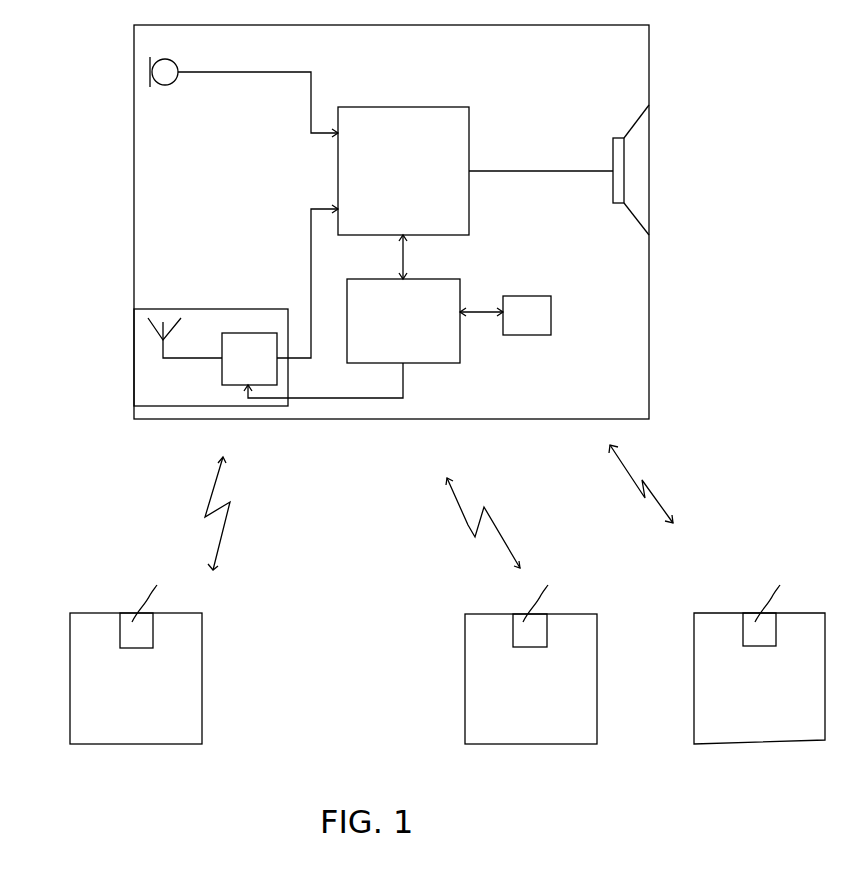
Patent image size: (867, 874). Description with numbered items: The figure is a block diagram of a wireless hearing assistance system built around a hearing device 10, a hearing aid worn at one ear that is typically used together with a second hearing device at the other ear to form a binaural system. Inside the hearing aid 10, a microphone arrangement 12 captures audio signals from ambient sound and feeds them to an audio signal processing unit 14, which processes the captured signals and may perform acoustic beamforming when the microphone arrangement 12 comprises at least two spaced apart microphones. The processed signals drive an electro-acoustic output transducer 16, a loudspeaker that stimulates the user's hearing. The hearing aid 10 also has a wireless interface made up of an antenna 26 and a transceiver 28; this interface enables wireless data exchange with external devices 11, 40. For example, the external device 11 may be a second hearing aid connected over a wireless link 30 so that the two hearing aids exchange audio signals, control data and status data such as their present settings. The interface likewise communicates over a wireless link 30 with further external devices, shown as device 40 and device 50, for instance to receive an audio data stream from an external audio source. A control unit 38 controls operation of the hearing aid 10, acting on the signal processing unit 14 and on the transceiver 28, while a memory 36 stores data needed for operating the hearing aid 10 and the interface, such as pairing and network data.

The hearing device 10 is at (537, 419).
The external device 11 is at (142, 753).
The microphone arrangement 12 is at (150, 76).
The audio signal processing unit 14 is at (415, 182).
The electro-acoustic output transducer 16 is at (636, 162).
The antenna 26 is at (150, 333).
The transceiver 28 is at (261, 368).
The wireless link 30 is at (227, 520).
The memory 36 is at (539, 326).
The control unit 38 is at (415, 331).
The external device 40 is at (536, 753).
The external device 50 is at (768, 752).